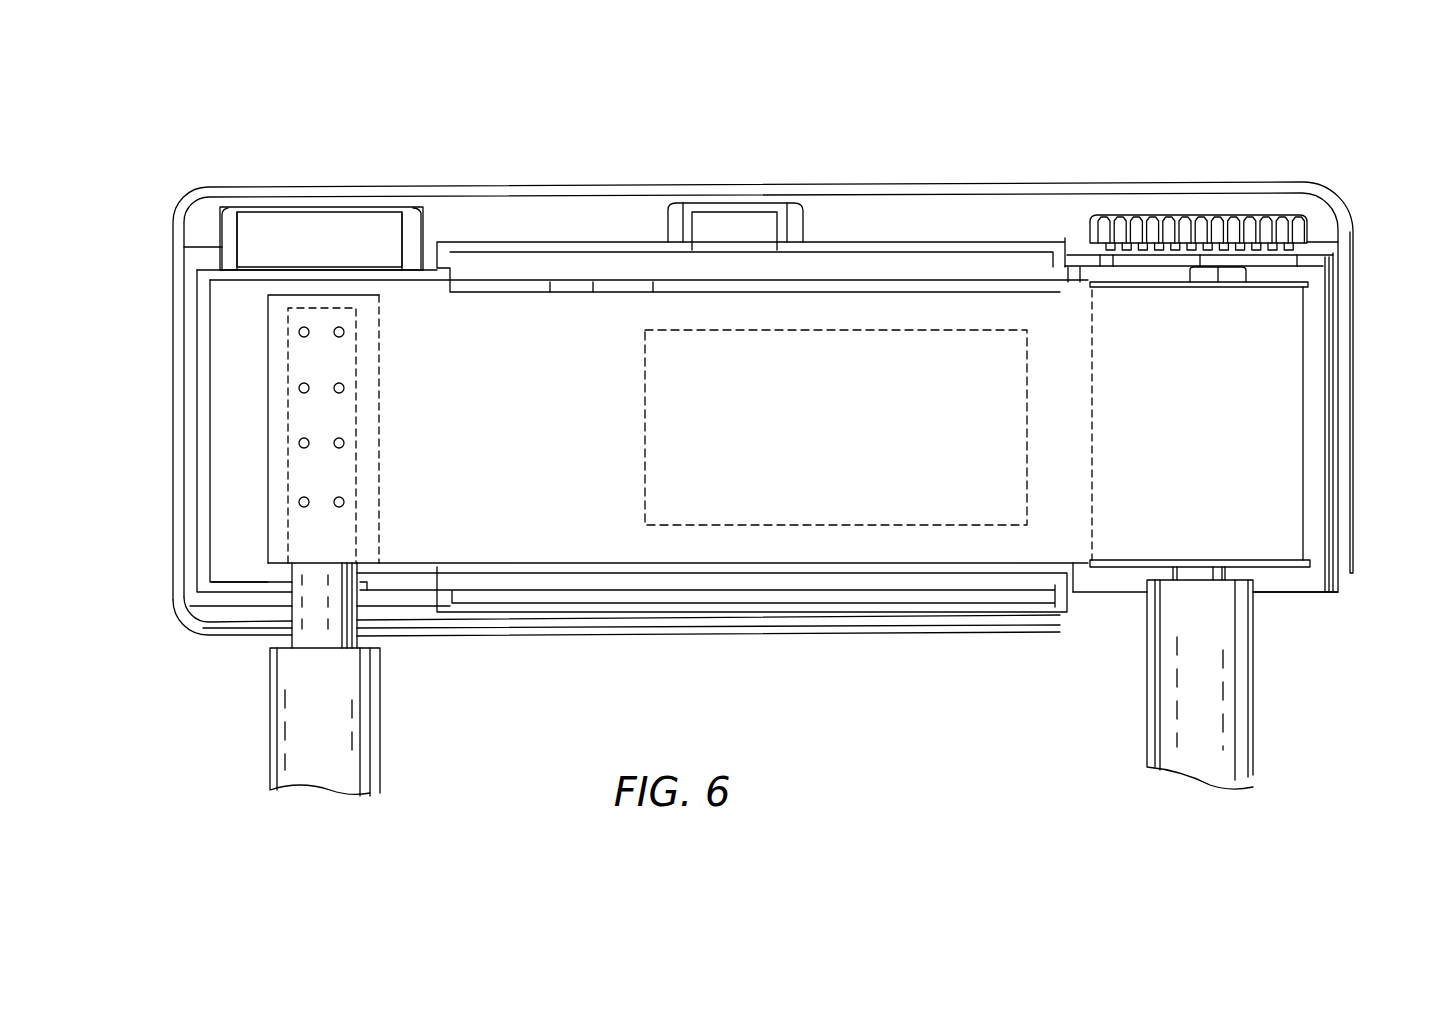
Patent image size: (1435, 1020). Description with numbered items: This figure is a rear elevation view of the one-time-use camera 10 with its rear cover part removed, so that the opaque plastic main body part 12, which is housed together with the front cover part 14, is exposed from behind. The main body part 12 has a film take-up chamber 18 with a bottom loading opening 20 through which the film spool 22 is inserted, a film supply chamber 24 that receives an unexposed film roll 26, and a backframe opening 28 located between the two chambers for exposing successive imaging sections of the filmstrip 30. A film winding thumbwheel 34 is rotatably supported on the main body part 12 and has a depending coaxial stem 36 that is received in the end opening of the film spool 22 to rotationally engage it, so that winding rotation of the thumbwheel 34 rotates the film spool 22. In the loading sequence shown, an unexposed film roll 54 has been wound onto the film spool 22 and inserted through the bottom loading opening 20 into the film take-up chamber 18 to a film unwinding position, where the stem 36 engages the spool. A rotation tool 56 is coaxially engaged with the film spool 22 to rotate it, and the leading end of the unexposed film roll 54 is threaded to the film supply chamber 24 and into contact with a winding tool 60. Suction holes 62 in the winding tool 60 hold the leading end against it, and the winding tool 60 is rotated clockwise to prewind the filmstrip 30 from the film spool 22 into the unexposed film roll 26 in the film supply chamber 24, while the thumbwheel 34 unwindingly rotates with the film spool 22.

The one-time-use camera 10 is at (255, 173).
The main body part 12 is at (203, 492).
The front cover part 14 is at (175, 272).
The film take-up chamber 18 is at (1313, 450).
The bottom loading opening 20 is at (1293, 583).
The film spool 22 is at (1308, 284).
The film supply chamber 24 is at (233, 560).
The unexposed film roll 26 is at (267, 377).
The backframe opening 28 is at (645, 515).
The filmstrip 30 is at (477, 357).
The film winding thumbwheel 34 is at (1093, 220).
The depending coaxial stem 36 is at (1187, 273).
The unexposed film roll 54 is at (1092, 418).
The rotation tool 56 is at (1165, 705).
The winding tool 60 is at (370, 713).
The suction holes 62 is at (344, 443).